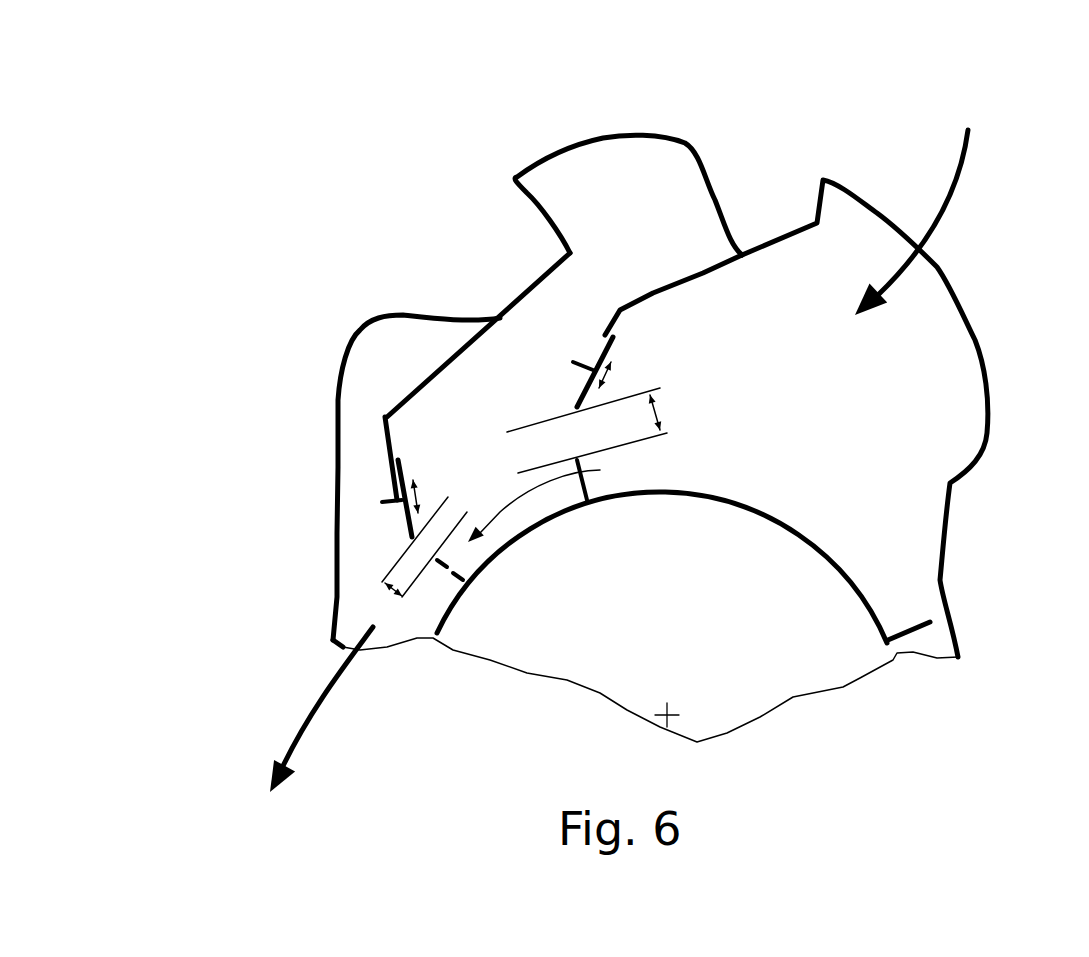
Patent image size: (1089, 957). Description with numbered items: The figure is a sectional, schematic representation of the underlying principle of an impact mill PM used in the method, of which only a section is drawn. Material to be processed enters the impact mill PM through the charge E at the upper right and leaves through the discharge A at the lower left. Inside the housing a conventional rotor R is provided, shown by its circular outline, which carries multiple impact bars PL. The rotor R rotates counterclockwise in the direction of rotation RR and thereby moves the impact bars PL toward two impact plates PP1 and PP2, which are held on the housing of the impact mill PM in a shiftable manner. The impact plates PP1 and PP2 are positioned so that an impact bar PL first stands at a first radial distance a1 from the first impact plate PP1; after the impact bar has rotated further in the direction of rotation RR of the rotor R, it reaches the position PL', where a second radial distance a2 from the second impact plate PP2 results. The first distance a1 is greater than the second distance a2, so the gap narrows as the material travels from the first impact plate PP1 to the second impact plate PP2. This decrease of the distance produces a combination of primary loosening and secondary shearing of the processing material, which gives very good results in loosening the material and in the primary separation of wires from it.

The impact mill PM is at (588, 147).
The first impact plate PP1 is at (602, 337).
The second impact plate PP2 is at (402, 518).
The first radial distance a1 is at (660, 410).
The second radial distance a2 is at (388, 590).
The impact bar PL is at (763, 414).
The impact bar position PL' is at (420, 668).
The direction of rotation RR is at (525, 493).
The rotor R is at (787, 682).
The discharge A is at (317, 728).
The charge E is at (914, 200).